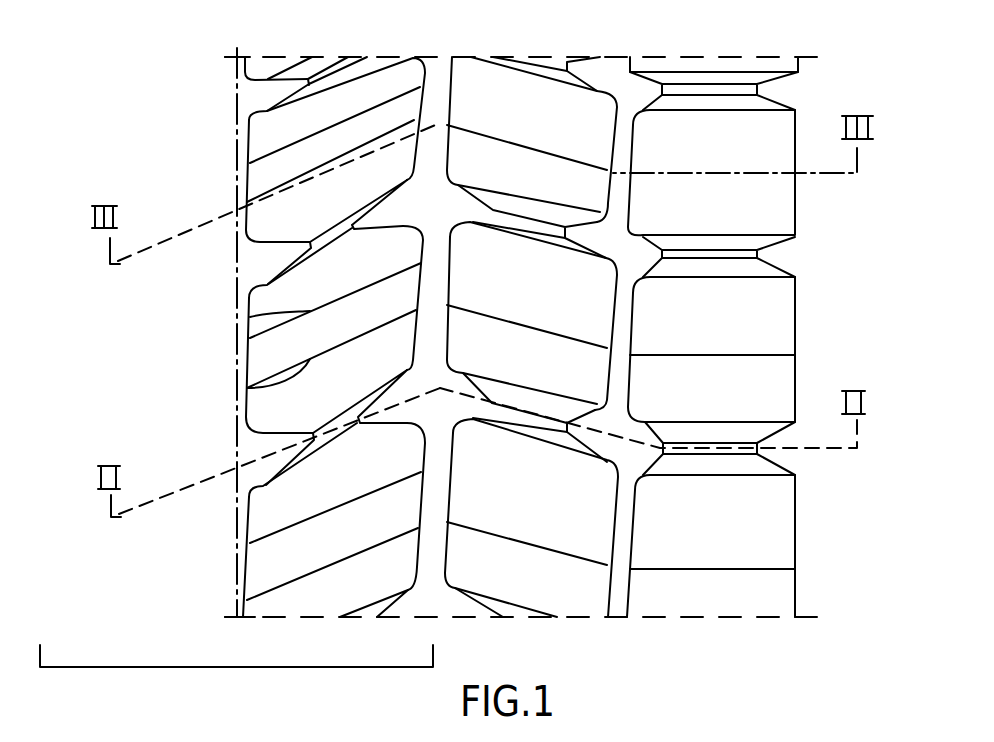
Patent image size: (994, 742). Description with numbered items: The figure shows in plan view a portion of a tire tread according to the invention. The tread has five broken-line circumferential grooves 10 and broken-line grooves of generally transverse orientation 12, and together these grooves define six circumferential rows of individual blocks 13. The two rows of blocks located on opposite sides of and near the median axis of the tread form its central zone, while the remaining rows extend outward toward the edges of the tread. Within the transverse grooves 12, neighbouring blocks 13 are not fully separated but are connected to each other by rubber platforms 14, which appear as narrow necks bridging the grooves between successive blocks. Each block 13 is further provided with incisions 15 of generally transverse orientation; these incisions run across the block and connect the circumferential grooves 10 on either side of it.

The circumferential groove 10 is at (443, 108).
The transverse groove 12 is at (263, 450).
The block 13 is at (265, 567).
The rubber platform 14 is at (320, 242).
The incision 15 is at (247, 388).